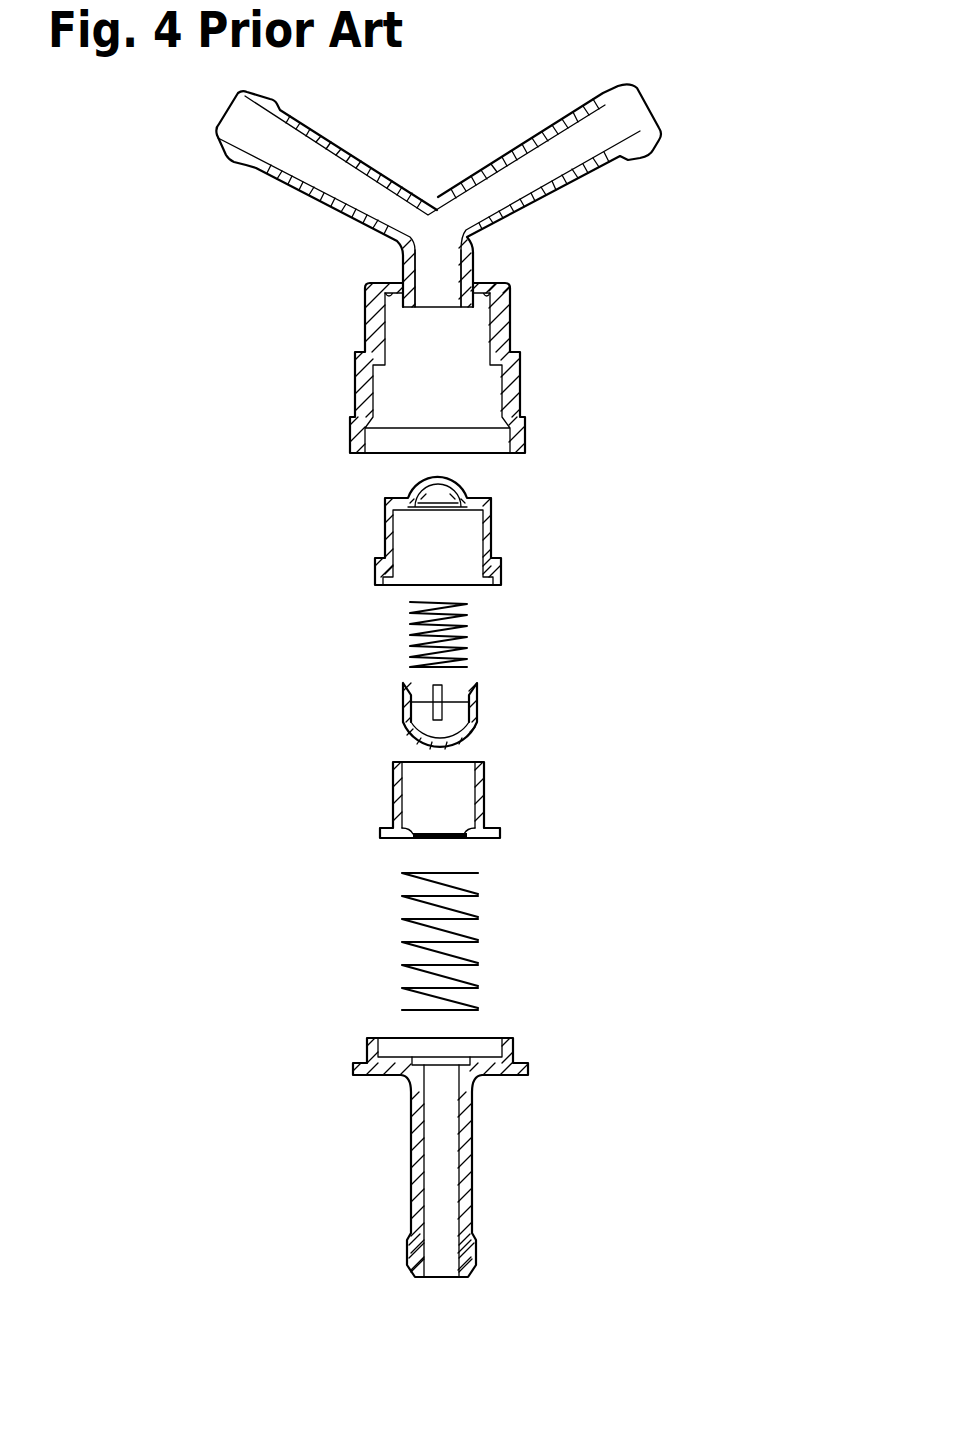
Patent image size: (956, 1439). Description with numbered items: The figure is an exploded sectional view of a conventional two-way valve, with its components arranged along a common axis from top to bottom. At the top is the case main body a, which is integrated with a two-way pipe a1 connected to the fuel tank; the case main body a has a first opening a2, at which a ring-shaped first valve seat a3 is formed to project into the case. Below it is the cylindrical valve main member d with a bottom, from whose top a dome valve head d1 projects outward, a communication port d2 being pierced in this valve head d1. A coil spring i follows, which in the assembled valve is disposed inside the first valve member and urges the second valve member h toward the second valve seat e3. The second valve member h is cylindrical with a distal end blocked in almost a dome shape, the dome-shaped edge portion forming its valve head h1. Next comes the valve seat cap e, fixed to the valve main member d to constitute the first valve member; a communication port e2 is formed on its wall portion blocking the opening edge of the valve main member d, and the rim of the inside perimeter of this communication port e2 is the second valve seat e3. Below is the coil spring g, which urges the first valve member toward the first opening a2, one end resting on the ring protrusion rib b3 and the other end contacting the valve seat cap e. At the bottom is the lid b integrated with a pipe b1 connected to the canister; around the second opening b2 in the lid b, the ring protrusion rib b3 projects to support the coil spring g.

The case main body a is at (510, 331).
The two-way pipe a1 is at (340, 147).
The first opening a2 is at (447, 272).
The first valve seat a3 is at (410, 310).
The valve main member d is at (490, 552).
The dome valve head d1 is at (467, 478).
The communication port d2 is at (433, 468).
The coil spring i is at (467, 630).
The second valve member h is at (475, 710).
The valve head h1 is at (413, 729).
The valve seat cap e is at (482, 795).
The communication port e2 is at (430, 832).
The second valve seat e3 is at (467, 837).
The coil spring g is at (477, 942).
The lid b is at (513, 1075).
The pipe b1 is at (472, 1190).
The second opening b2 is at (437, 1075).
The ring protrusion rib b3 is at (405, 1060).